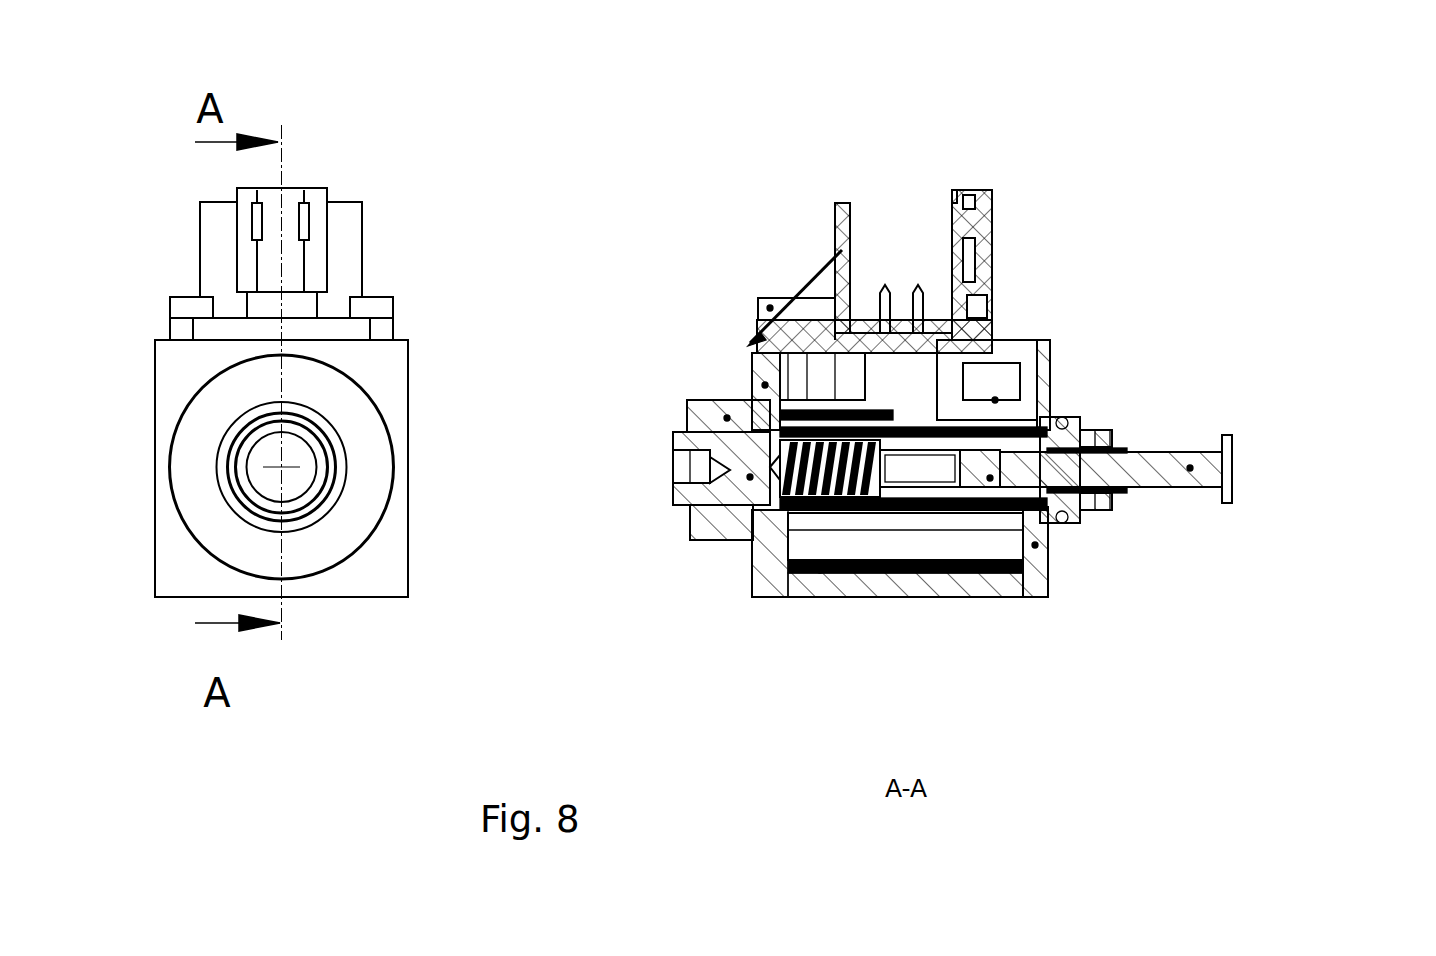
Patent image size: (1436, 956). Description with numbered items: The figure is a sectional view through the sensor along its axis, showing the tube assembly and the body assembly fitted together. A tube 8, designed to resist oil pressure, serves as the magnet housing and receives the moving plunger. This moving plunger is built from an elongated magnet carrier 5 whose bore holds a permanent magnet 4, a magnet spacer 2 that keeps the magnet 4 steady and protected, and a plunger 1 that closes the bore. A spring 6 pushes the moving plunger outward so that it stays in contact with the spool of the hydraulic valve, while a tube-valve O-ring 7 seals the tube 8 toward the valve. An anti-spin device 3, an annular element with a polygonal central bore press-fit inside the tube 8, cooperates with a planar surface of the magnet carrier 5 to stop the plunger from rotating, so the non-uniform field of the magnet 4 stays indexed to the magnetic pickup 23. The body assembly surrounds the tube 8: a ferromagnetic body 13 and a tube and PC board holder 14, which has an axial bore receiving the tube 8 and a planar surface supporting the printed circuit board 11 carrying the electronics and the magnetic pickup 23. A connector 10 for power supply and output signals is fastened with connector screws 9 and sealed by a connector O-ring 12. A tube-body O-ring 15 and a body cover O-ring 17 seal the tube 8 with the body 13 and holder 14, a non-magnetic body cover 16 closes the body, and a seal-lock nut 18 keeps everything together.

The plunger 1 is at (1190, 468).
The magnet spacer 2 is at (1110, 442).
The anti-spin device 3 is at (1115, 517).
The permanent magnet 4 is at (918, 581).
The magnet carrier 5 is at (699, 212).
The spring 6 is at (699, 534).
The tube-valve O-ring 7 is at (1068, 407).
The tube 8 is at (644, 492).
The connector screws 9 is at (714, 289).
The connector 10 is at (874, 271).
The printed circuit board 11 is at (888, 200).
The connector O-ring seal 12 is at (702, 295).
The body 13 is at (656, 367).
The tube and PC board holder 14 is at (847, 600).
The tube-body O-ring 15 is at (1050, 400).
The body cover 16 is at (1040, 575).
The body cover O-ring 17 is at (1092, 315).
The seal-lock nut 18 is at (639, 470).
The magnetic pickup 23 is at (995, 398).